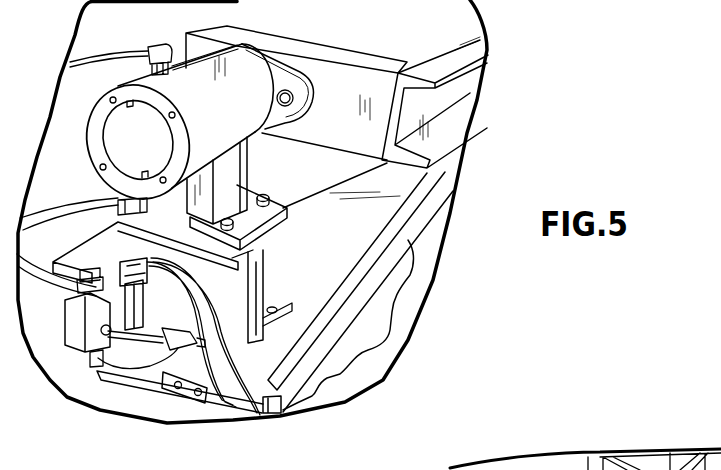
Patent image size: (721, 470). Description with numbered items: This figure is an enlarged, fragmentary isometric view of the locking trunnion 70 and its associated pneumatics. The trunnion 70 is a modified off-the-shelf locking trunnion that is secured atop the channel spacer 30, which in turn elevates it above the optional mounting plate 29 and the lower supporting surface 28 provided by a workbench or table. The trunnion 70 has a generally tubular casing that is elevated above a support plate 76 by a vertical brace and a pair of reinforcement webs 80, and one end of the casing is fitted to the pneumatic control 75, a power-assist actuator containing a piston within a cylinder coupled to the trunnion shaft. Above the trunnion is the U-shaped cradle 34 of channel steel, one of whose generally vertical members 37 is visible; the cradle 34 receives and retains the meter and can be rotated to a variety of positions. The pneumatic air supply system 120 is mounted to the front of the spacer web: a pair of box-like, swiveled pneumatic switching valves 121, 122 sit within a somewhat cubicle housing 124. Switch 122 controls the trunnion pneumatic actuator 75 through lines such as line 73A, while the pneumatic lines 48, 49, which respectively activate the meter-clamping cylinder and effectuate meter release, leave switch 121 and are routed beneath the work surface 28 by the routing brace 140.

The lower supporting surface 28 is at (378, 315).
The mounting plate 29 is at (412, 236).
The channel spacer 30 is at (267, 262).
The cradle 34 is at (444, 40).
The vertical cradle member 37 is at (368, 99).
The pneumatic line 48 is at (212, 287).
The pneumatic control line 49 is at (210, 395).
The locking trunnion 70 is at (265, 98).
The line 73A is at (138, 57).
The pneumatic control 75 is at (90, 120).
The support plate 76 is at (273, 227).
The reinforcement webs 80 is at (240, 158).
The pneumatic air supply system 120 is at (82, 360).
The pneumatic switching valve 121 is at (149, 294).
The pneumatic switching valve 122 is at (100, 321).
The housing 124 is at (86, 252).
The routing brace 140 is at (262, 413).